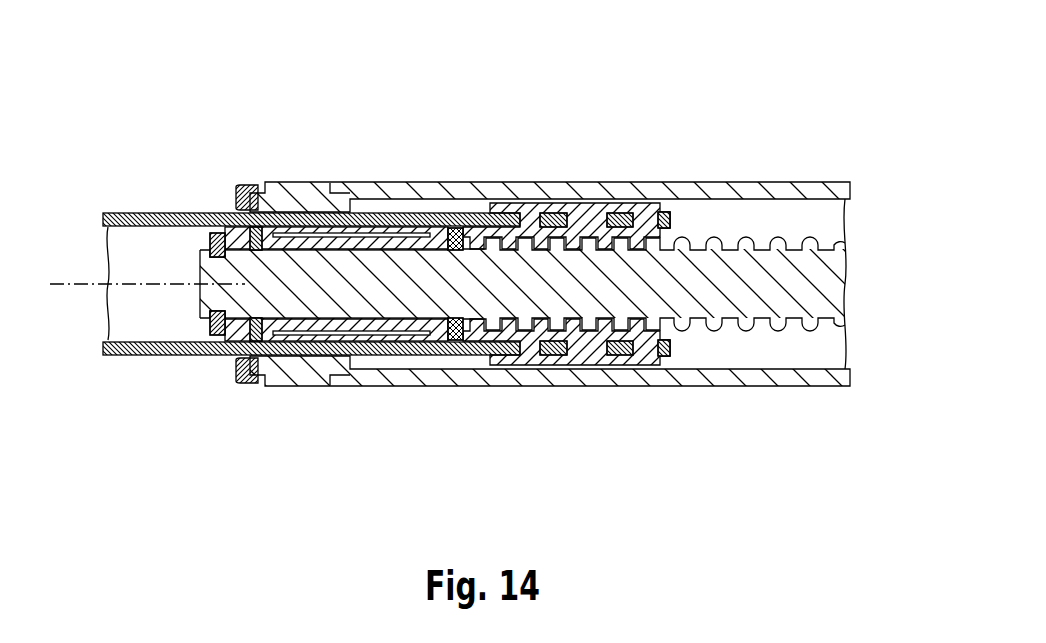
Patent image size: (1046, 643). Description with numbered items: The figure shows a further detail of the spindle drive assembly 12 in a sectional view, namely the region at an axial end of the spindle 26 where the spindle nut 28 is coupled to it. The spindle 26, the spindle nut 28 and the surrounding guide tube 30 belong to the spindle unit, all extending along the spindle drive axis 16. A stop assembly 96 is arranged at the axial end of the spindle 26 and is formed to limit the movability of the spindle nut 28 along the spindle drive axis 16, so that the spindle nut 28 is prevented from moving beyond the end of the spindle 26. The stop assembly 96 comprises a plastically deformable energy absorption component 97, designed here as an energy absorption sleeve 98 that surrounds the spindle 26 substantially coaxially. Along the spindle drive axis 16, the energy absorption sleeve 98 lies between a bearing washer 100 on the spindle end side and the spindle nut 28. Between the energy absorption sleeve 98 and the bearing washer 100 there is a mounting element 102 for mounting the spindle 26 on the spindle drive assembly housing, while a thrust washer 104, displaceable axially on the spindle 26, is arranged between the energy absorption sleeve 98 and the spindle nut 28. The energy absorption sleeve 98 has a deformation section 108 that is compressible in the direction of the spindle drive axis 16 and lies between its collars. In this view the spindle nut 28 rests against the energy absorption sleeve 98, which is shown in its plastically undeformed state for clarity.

The spindle drive assembly 12 is at (543, 95).
The spindle drive axis 16 is at (62, 284).
The spindle 26 is at (718, 270).
The spindle nut 28 is at (587, 227).
The guide tube 30 is at (700, 377).
The stop assembly 96 is at (330, 415).
The plastically deformable energy absorption component 97 is at (336, 176).
The energy absorption sleeve 98 is at (377, 240).
The bearing washer 100 is at (222, 335).
The mounting element 102 is at (257, 247).
The thrust washer 104 is at (450, 233).
The deformation section 108 is at (398, 323).